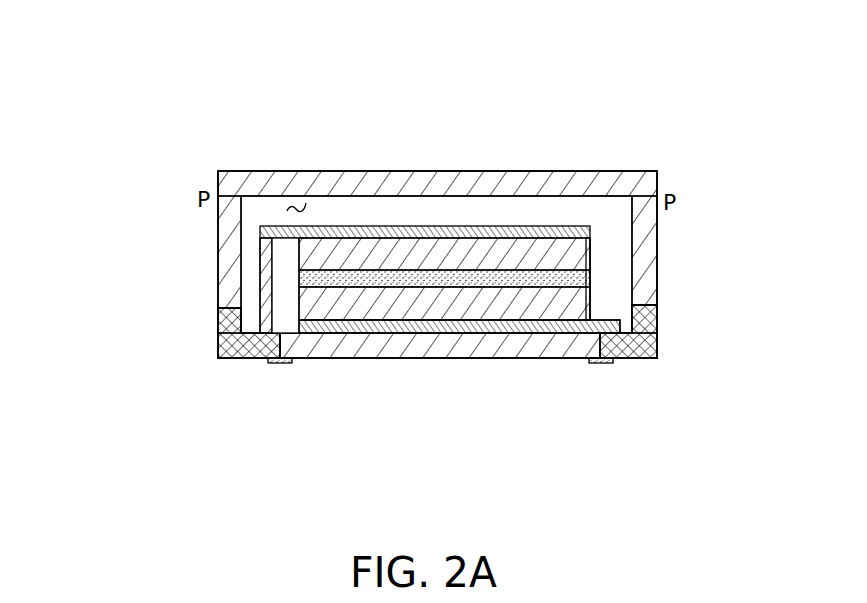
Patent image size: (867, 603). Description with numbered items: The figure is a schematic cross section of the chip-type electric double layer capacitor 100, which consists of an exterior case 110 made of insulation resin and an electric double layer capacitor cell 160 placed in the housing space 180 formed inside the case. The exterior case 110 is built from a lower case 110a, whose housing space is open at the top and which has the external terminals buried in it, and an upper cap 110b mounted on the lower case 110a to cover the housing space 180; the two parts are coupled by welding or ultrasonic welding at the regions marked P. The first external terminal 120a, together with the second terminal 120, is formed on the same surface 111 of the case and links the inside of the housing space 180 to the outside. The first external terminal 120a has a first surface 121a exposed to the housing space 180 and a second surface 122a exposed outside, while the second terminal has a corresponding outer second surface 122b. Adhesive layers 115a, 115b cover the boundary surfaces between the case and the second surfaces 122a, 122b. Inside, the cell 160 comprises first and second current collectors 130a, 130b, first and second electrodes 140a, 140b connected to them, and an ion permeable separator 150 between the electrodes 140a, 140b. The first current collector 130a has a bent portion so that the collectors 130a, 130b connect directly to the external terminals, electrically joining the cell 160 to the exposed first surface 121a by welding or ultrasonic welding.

The chip-type electric double layer capacitor 100 is at (433, 28).
The exterior case 110 is at (657, 80).
The lower case 110a is at (573, 174).
The upper cap 110b is at (659, 174).
The same surface of the external case 111 is at (448, 347).
The adhesive layer 115a is at (277, 363).
The adhesive layer 115b is at (602, 363).
The second bonding portion 120 is at (623, 360).
The first external terminal 120a is at (220, 332).
The first surface of the first external terminal 121a is at (217, 312).
The second surface of the first external terminal 122a is at (237, 358).
The second surface of the second external terminal 122b is at (640, 360).
The first current collector 130a is at (260, 290).
The second current collector 130b is at (613, 332).
The first electrode 140a is at (308, 260).
The second electrode 140b is at (582, 298).
The ion permeable separator 150 is at (582, 260).
The electric double layer capacitor cell 160 is at (400, 218).
The housing space 180 is at (306, 203).